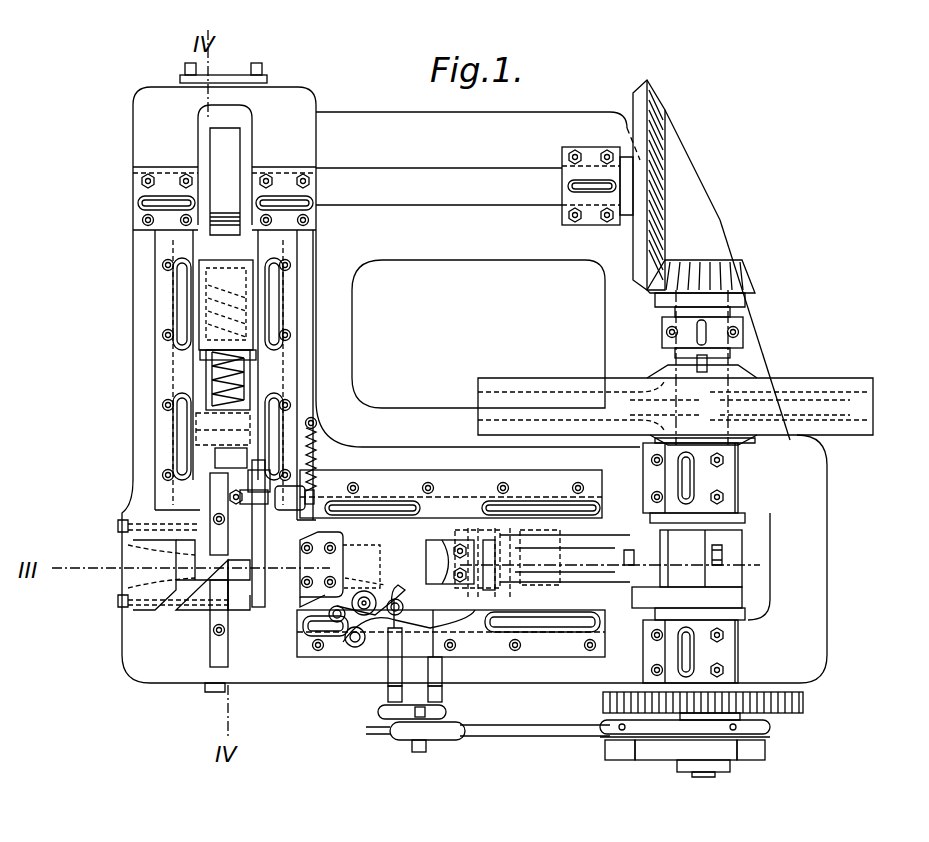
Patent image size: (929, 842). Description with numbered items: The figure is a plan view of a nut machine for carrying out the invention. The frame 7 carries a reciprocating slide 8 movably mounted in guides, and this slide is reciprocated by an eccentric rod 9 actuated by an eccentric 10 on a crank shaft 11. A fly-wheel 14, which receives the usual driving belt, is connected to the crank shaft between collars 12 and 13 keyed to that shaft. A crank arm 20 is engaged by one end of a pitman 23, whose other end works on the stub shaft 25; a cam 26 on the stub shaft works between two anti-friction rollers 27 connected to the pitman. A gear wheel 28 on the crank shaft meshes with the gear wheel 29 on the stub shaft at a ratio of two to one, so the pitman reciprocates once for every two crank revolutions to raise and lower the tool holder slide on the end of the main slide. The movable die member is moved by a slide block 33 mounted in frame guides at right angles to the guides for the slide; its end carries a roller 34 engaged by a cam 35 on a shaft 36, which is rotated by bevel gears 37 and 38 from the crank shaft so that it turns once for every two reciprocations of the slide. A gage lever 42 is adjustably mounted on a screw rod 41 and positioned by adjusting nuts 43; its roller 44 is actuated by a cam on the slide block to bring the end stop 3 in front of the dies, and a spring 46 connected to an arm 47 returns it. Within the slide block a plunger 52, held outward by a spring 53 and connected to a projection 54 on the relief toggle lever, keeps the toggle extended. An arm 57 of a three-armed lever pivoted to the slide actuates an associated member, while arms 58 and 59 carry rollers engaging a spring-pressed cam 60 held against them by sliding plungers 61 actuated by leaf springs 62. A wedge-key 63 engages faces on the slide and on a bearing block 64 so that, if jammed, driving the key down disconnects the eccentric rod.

The end stop 3 is at (237, 570).
The frame 7 is at (815, 602).
The reciprocating slide 8 is at (451, 505).
The eccentric rod 9 is at (650, 545).
The eccentric 10 is at (722, 555).
The crank shaft 11 is at (722, 358).
The collar 12 is at (750, 372).
The collar 13 is at (752, 440).
The fly-wheel 14 is at (843, 387).
The crank arm 20 is at (446, 713).
The pitman 23 is at (537, 740).
The stub shaft 25 is at (708, 772).
The cam 26 is at (662, 752).
The anti-friction rollers 27 is at (765, 750).
The gear wheel 28 is at (760, 717).
The gear wheel 29 is at (803, 702).
The slide block 33 is at (200, 355).
The roller 34 is at (226, 291).
The cam 35 is at (232, 152).
The shaft 36 is at (474, 186).
The bevel gear 37 is at (665, 150).
The bevel gear 38 is at (745, 255).
The screw rod 41 is at (304, 498).
The gage lever 42 is at (265, 540).
The adjusting nuts 43 is at (250, 500).
The roller 44 is at (245, 480).
The spring 46 is at (318, 446).
The arm 47 is at (309, 496).
The plunger 52 is at (215, 380).
The spring 53 is at (215, 371).
The projection 54 is at (210, 422).
The arm 57 is at (352, 578).
The arm 58 is at (375, 598).
The arm 59 is at (348, 620).
The spring-pressed cam 60 is at (372, 637).
The sliding plungers 61 is at (442, 656).
The leaf springs 62 is at (395, 700).
The wedge-key 63 is at (426, 553).
The bearing block 64 is at (480, 565).